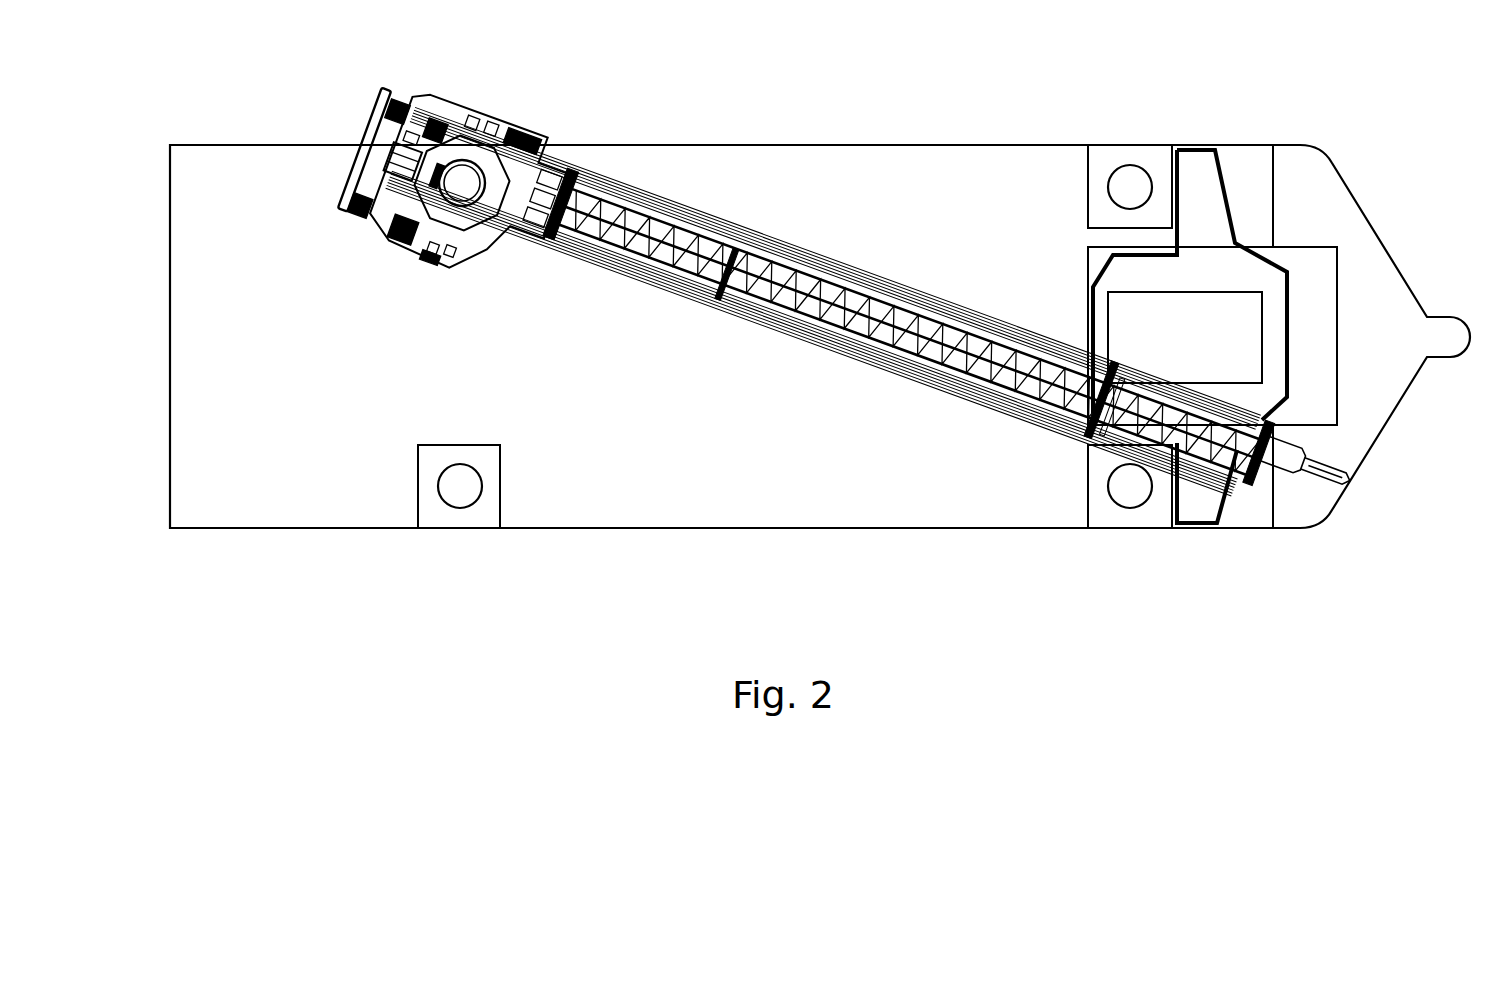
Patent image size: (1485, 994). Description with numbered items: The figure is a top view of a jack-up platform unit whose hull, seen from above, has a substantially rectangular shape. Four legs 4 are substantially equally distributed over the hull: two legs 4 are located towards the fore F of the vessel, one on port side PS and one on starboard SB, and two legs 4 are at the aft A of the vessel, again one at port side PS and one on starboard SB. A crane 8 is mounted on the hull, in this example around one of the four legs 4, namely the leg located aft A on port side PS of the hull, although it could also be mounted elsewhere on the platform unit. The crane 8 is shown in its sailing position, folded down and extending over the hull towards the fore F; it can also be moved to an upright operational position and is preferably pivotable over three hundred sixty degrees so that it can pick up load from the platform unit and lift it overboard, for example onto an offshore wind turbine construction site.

The aft A is at (170, 340).
The port side PS is at (824, 145).
The starboard SB is at (824, 528).
The fore F is at (1387, 248).
The leg 4 is at (462, 180).
The crane 8 is at (830, 292).